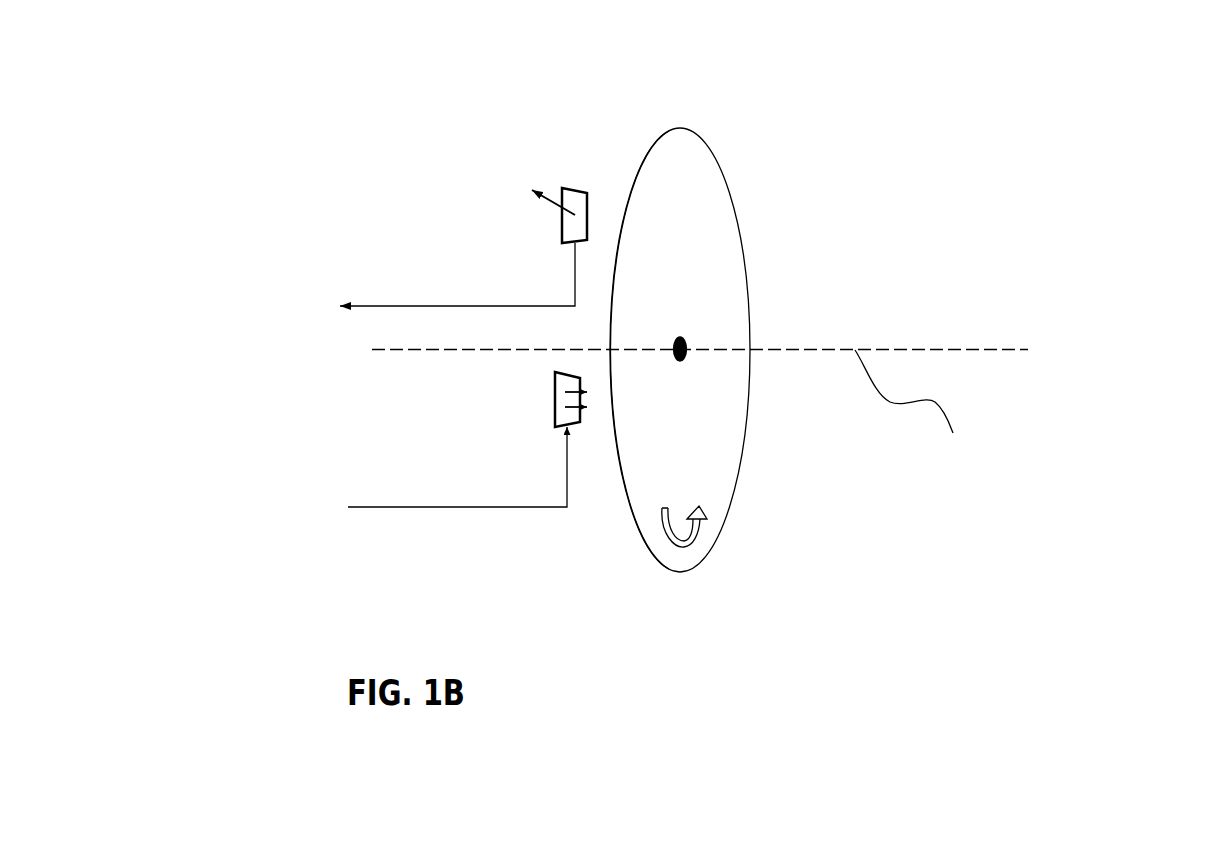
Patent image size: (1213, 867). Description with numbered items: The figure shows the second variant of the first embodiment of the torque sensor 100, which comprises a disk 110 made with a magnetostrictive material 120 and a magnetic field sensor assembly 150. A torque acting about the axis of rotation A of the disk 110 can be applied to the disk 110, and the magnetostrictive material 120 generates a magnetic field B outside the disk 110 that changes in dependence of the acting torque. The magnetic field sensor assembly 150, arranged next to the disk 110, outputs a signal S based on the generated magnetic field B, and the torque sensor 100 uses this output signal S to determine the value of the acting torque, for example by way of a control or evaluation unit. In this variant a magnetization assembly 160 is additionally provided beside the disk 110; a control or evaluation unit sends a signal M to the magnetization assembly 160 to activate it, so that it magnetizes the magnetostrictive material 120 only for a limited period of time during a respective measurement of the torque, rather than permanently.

The torque sensor 100 is at (786, 353).
The disk 110 is at (762, 518).
The magnetostrictive material 120 is at (705, 258).
The magnetic field sensor assembly 150 is at (578, 188).
The magnetization assembly 160 is at (567, 387).